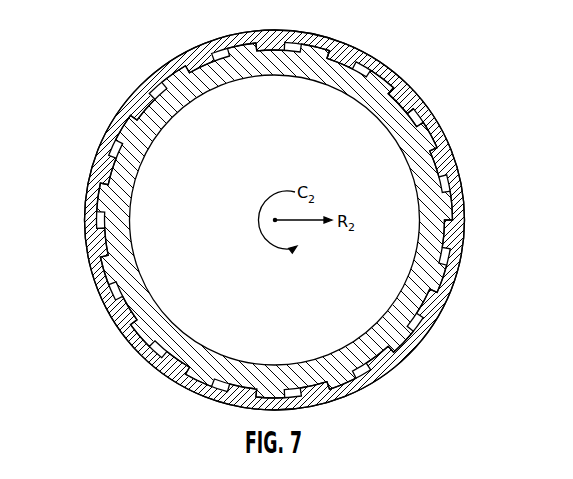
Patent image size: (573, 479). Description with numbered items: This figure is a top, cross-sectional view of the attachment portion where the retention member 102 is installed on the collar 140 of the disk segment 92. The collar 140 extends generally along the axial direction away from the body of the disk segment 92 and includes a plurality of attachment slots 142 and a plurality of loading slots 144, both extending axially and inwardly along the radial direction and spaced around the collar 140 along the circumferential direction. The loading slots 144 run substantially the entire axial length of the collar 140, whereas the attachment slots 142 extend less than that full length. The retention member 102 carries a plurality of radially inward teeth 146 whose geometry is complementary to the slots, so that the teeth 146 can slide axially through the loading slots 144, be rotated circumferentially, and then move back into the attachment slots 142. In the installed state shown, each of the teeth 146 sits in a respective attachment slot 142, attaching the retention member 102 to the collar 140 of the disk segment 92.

The disk segment 92 is at (87, 236).
The retention member 102 is at (388, 66).
The collar 140 is at (100, 158).
The attachment slots 142 is at (333, 47).
The loading slots 144 is at (419, 117).
The teeth 146 is at (406, 89).